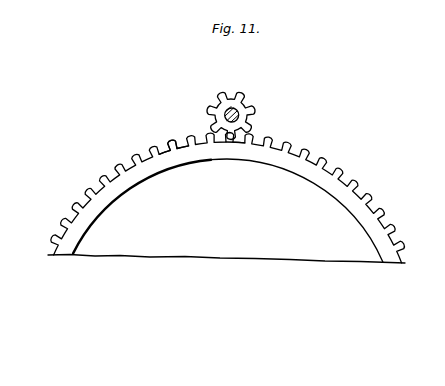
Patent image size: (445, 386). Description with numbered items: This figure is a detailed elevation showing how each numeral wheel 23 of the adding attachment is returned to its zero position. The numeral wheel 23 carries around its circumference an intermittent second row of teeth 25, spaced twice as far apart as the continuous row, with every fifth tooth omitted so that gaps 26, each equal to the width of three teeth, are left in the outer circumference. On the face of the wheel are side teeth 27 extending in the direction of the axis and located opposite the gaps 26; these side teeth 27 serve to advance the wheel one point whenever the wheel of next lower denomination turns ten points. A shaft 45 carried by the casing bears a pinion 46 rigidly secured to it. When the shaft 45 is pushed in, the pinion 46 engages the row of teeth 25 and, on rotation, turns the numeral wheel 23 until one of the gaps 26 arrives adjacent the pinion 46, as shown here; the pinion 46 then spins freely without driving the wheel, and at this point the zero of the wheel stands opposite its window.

The numeral wheel 23 is at (342, 208).
The second row of teeth 25 is at (84, 187).
The gaps 26 is at (178, 141).
The side teeth 27 is at (232, 145).
The shaft 45 is at (236, 110).
The pinions 46 is at (246, 104).